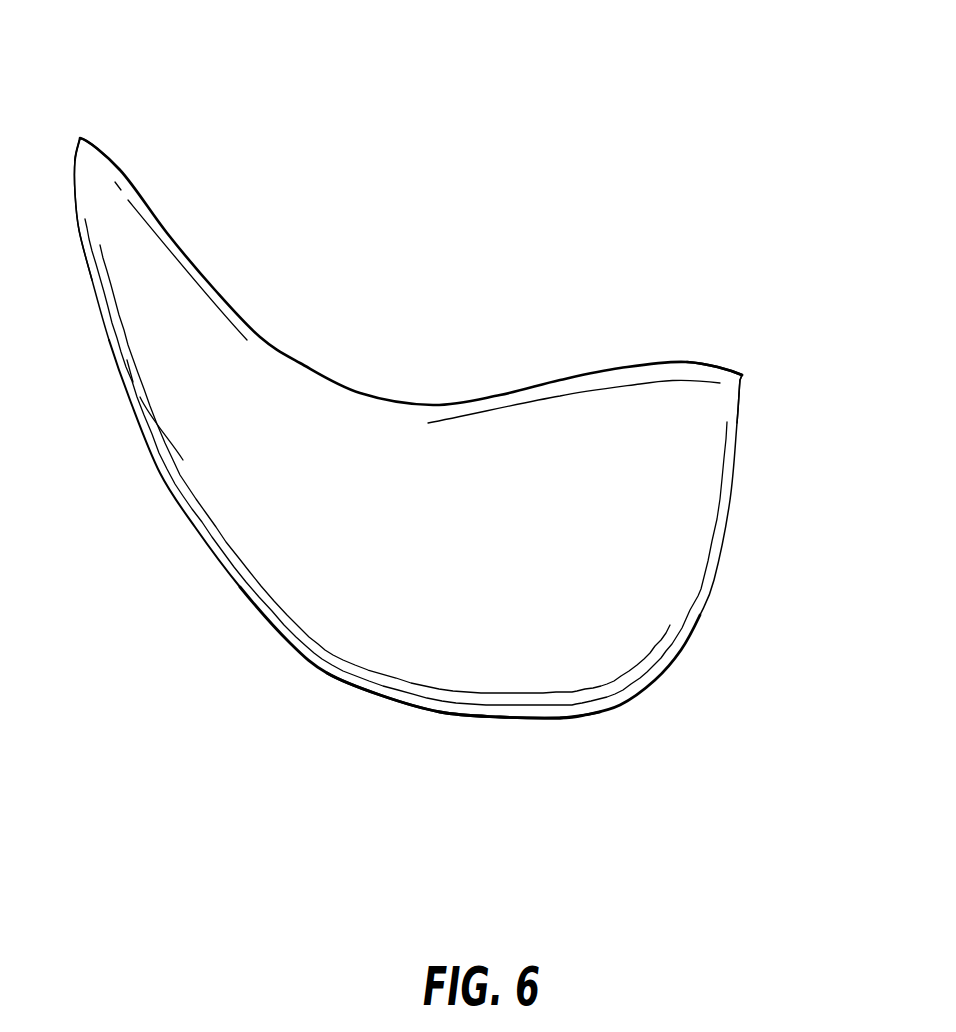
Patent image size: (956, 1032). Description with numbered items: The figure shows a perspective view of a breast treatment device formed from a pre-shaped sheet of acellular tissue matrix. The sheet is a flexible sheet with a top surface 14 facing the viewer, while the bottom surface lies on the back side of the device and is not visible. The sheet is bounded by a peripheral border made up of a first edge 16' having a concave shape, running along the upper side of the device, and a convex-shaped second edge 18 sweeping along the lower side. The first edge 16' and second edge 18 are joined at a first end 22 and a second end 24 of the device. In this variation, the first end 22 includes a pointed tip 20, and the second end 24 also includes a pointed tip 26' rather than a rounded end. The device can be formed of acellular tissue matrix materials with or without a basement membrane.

The top surface 14 is at (568, 658).
The first edge 16' is at (417, 296).
The second edge 18 is at (327, 685).
The pointed tip 20 is at (78, 137).
The first end 22 is at (74, 196).
The second end 24 is at (744, 504).
The pointed tip 26' is at (770, 386).